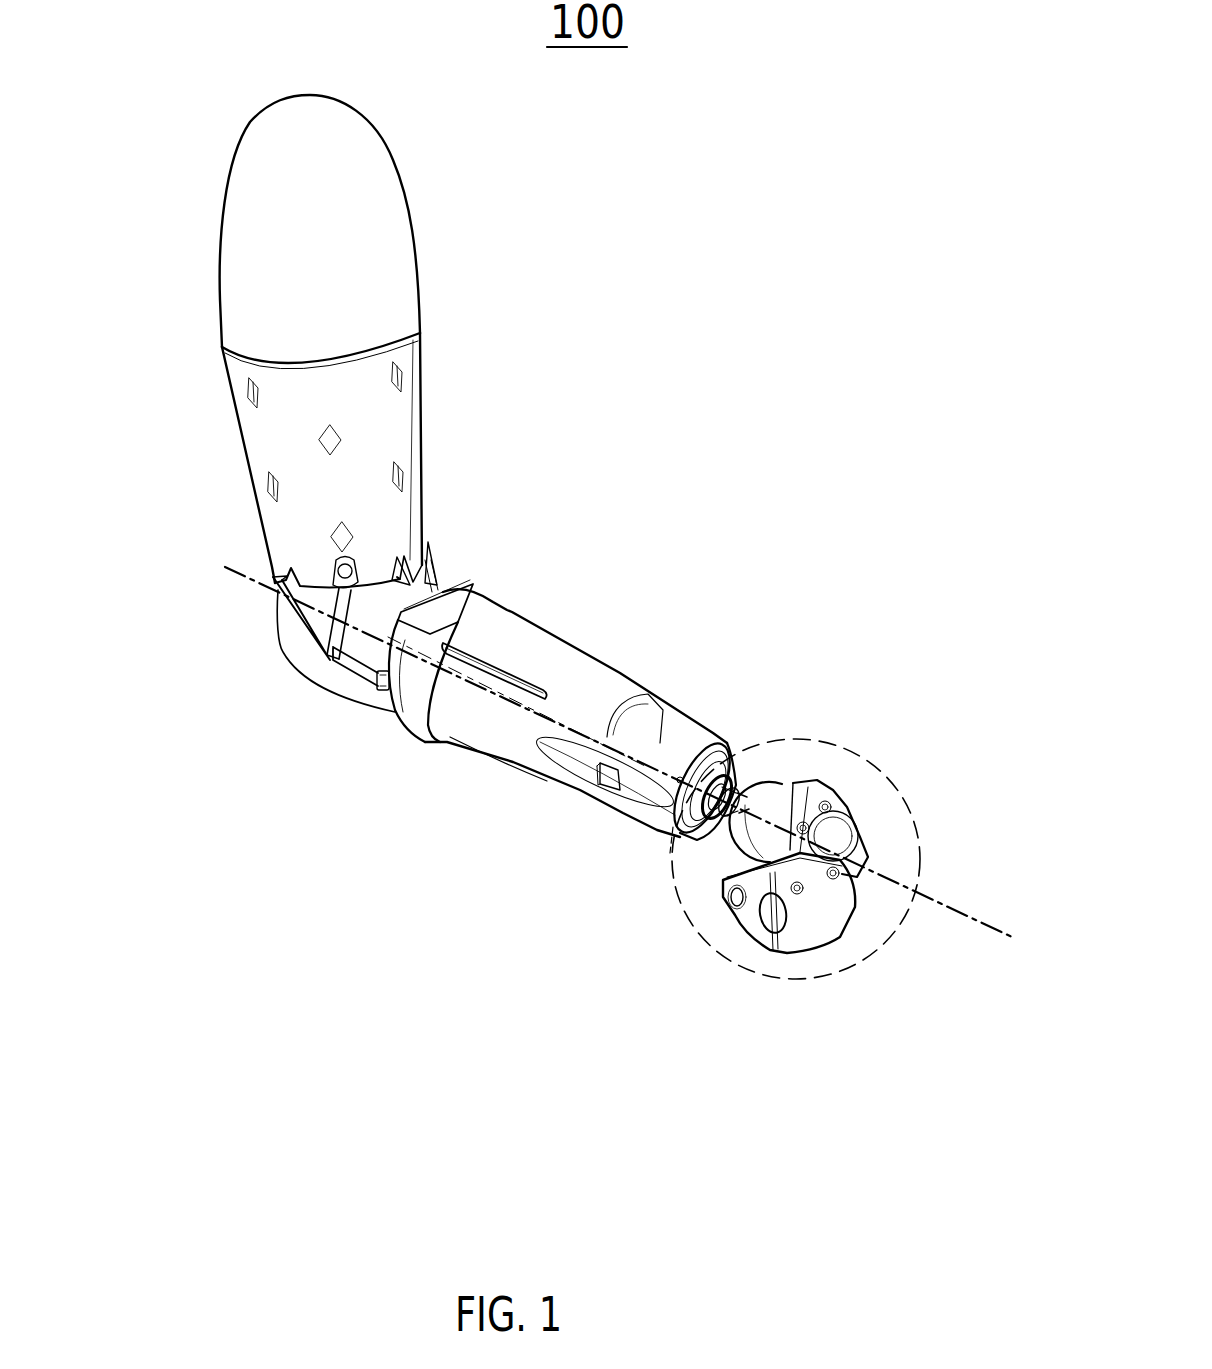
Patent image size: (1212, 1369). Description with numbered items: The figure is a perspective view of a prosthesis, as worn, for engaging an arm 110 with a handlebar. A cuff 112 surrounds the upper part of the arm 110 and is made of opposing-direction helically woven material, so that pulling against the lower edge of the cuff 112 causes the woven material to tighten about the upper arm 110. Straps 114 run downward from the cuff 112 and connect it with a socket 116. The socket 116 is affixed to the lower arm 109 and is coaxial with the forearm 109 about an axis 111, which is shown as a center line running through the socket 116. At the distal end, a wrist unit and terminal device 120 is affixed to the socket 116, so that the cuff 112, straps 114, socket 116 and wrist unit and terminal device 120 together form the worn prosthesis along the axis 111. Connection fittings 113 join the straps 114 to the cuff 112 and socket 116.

The lower arm 109 is at (308, 657).
The arm 110 is at (366, 260).
The axis 111 is at (947, 902).
The cuff 112 is at (388, 426).
The connector / attachment link 113 is at (348, 582).
The straps 114 is at (330, 638).
The socket 116 is at (593, 680).
The wrist unit and terminal device 120 is at (848, 752).